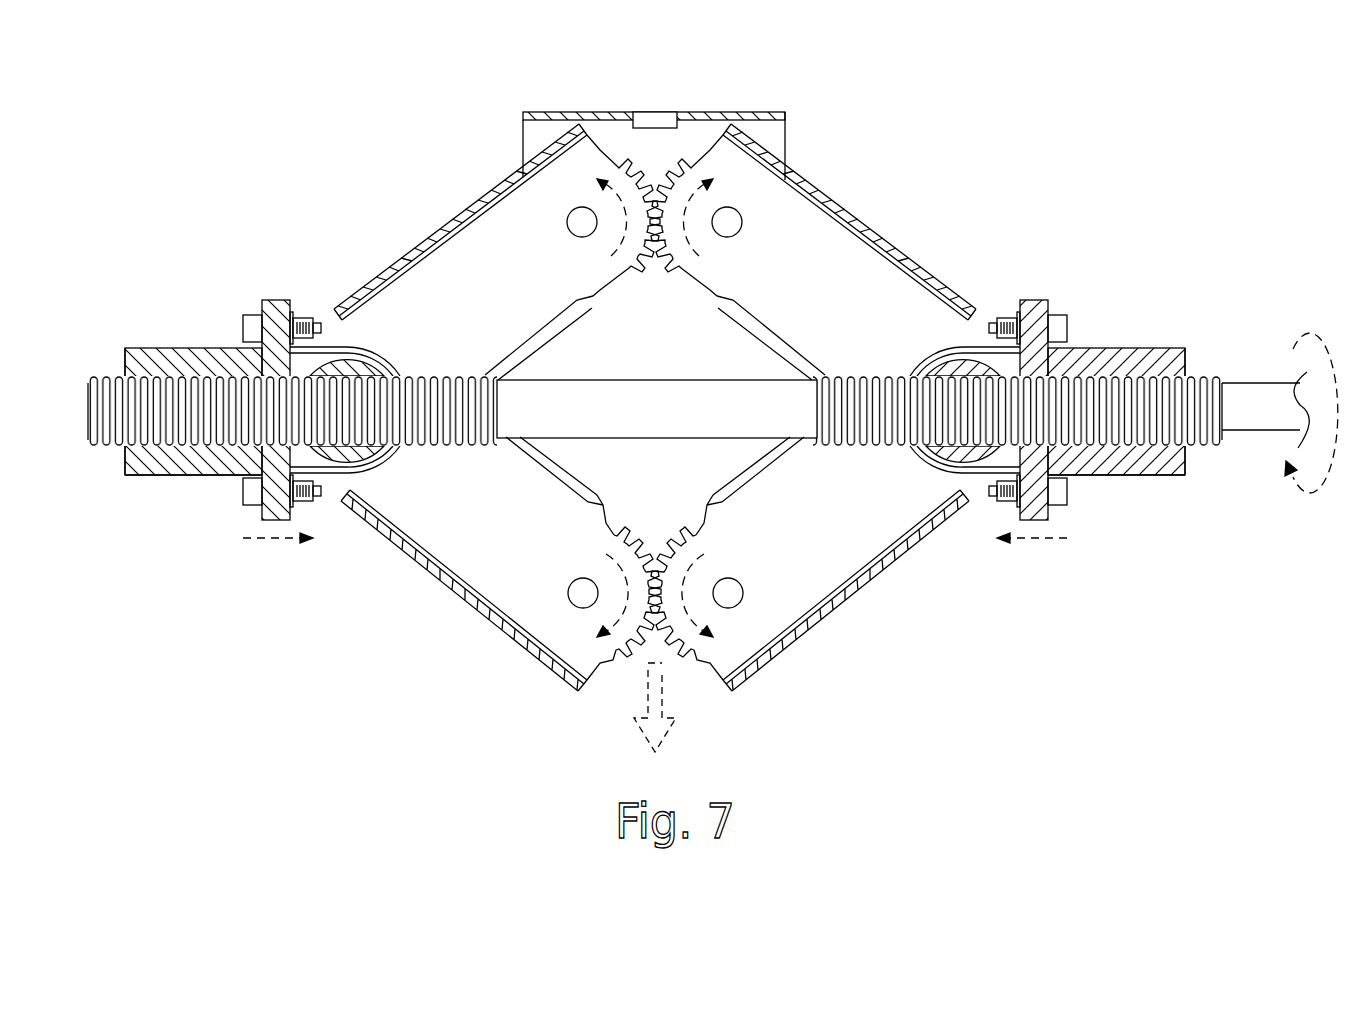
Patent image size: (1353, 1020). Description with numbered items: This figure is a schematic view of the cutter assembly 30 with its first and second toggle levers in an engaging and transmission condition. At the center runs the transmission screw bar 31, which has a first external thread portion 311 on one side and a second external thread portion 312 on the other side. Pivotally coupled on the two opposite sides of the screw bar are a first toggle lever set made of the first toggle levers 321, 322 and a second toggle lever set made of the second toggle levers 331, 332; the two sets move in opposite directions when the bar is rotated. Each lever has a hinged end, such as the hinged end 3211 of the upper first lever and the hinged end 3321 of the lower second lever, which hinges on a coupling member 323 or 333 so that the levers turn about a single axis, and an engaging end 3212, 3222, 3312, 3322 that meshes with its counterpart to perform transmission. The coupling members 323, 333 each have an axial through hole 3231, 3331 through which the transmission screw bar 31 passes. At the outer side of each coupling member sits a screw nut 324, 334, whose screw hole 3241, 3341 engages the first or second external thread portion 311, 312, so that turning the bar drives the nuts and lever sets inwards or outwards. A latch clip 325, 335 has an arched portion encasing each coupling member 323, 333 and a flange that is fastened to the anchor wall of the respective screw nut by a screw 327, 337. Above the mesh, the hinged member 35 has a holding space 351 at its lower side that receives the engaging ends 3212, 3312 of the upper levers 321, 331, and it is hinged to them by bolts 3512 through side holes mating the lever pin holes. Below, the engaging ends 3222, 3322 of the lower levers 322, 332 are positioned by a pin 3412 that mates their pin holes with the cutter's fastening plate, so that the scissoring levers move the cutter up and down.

The cutter assembly 30 is at (693, 397).
The transmission screw bar 31 is at (647, 395).
The first external thread portion 311 is at (426, 374).
The second external thread portion 312 is at (1097, 372).
The first toggle lever 321 is at (485, 252).
The first toggle lever 322 is at (498, 568).
The second toggle lever 331 is at (812, 252).
The second toggle lever 332 is at (828, 555).
The engaging end 3212 is at (627, 162).
The engaging end 3222 is at (610, 667).
The engaging end 3312 is at (673, 170).
The engaging end 3322 is at (690, 655).
The coupling member 323 is at (338, 360).
The axial through hole 3231 is at (342, 490).
The latch clip 325 is at (333, 480).
The screw 327 is at (243, 322).
The screw nut 324 is at (173, 357).
The screw hole 3241 is at (150, 362).
The hinged end 3211 is at (297, 458).
The coupling member 333 is at (955, 370).
The axial through hole 3331 is at (975, 345).
The latch clip 335 is at (977, 472).
The screw 337 is at (1050, 320).
The screw nut 334 is at (1150, 348).
The screw hole 3341 is at (1150, 474).
The hinged end 3321 is at (1080, 474).
The hinged member 35 is at (760, 112).
The holding space 351 is at (777, 143).
The bolt 3512 is at (582, 222).
The pin 3412 is at (583, 593).